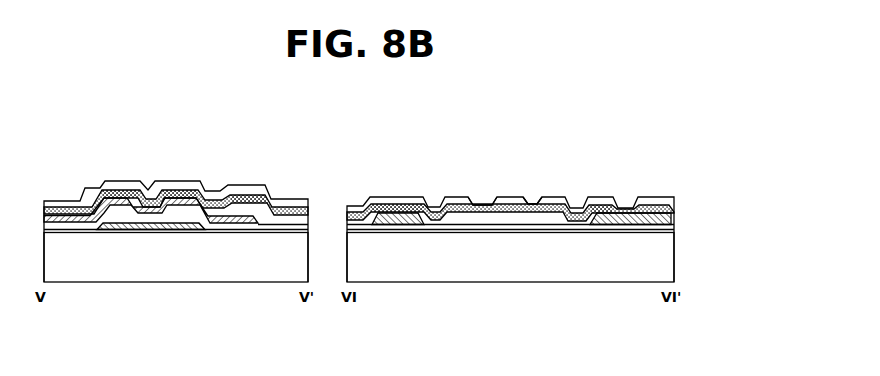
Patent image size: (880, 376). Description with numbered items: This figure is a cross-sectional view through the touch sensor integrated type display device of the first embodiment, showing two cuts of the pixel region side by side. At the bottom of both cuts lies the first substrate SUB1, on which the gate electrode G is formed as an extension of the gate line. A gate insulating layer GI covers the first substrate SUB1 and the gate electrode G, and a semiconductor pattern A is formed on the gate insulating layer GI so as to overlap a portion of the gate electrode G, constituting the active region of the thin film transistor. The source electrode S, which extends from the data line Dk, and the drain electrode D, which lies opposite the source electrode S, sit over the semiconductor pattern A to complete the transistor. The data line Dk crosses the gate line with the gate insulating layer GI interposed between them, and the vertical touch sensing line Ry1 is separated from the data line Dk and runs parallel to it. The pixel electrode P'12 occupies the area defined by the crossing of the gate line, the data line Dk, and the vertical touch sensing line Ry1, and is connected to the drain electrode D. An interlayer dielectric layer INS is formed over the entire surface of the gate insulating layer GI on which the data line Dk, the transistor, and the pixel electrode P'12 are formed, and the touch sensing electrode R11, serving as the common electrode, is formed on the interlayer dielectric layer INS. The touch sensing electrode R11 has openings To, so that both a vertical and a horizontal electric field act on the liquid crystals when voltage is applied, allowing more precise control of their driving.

The data line Dk is at (57, 200).
The interlayer dielectric layer INS is at (66, 210).
The source electrode S is at (120, 198).
The drain electrode D is at (192, 190).
The touch sensing electrode R11 is at (247, 193).
The gate insulating layer GI is at (77, 230).
The semiconductor pattern A is at (143, 213).
The gate electrode G is at (169, 231).
The first substrate SUB1 is at (216, 268).
The pixel electrode P'12 is at (462, 279).
The openings To is at (483, 186).
The vertical touch sensing line Ry1 is at (637, 231).